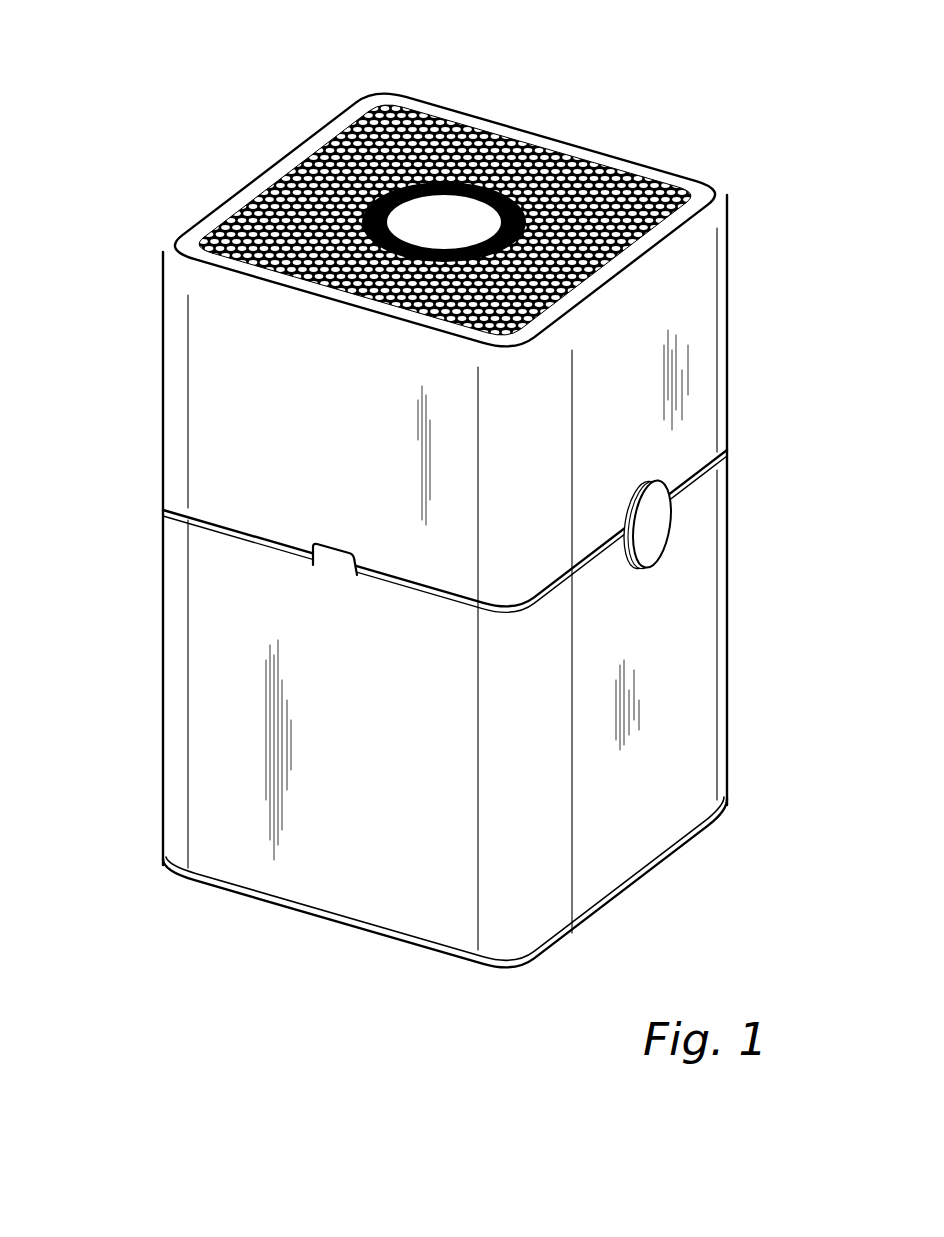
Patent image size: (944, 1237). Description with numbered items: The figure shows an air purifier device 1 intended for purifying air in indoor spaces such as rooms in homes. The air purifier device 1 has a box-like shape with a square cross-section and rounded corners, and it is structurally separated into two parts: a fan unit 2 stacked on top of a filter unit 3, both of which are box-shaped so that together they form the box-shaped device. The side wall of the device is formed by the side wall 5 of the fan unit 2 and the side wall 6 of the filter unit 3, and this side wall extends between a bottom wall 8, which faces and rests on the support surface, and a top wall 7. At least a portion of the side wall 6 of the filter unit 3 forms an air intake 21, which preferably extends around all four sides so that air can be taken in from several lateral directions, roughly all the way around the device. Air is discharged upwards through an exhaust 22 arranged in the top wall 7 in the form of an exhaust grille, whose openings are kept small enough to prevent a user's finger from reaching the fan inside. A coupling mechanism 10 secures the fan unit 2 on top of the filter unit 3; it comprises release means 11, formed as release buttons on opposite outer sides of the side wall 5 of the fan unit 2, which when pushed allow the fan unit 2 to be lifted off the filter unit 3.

The air purifier device 1 is at (710, 90).
The fan unit 2 is at (736, 364).
The filter unit 3 is at (748, 640).
The side wall of the fan unit 5 is at (690, 307).
The side wall of the filter unit 6 is at (688, 740).
The top wall 7 is at (313, 128).
The bottom wall 8 is at (297, 927).
The coupling mechanism 10 is at (286, 526).
The release means 11 is at (337, 545).
The air intake 21 is at (205, 762).
The exhaust 22 is at (441, 105).